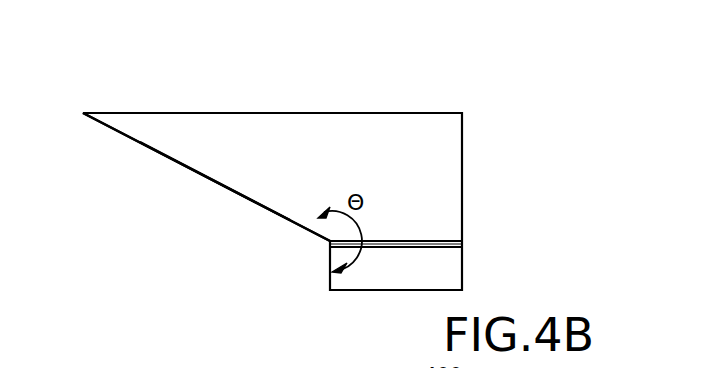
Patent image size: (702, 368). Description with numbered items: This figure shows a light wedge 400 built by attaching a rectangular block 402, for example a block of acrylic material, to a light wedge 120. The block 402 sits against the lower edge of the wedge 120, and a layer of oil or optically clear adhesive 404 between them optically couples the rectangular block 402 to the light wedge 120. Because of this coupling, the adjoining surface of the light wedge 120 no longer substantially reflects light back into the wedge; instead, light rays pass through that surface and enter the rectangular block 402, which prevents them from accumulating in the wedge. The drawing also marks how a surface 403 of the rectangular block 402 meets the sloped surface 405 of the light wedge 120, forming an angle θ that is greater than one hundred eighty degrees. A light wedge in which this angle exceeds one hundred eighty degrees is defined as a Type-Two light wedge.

The light wedge 400 is at (343, 103).
The light wedge 120 is at (244, 158).
The rectangular block 402 is at (414, 280).
The surface 403 is at (332, 278).
The oil or optically clear adhesive 404 is at (462, 244).
The surface 405 is at (208, 177).